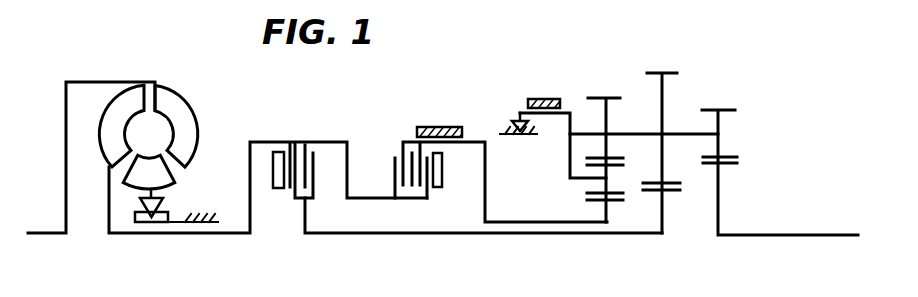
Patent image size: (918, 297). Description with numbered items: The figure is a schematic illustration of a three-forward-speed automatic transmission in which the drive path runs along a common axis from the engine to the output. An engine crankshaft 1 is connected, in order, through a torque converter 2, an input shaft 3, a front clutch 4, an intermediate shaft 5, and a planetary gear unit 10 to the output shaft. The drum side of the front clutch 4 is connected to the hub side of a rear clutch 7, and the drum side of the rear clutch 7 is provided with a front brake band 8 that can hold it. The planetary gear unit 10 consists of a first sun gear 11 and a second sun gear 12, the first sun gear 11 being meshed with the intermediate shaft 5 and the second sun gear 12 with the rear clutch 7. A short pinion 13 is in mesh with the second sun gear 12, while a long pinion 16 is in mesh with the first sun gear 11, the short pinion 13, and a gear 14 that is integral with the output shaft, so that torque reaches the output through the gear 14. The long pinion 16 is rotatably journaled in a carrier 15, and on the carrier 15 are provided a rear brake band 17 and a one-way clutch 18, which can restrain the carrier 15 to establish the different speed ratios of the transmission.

The engine crankshaft 1 is at (43, 234).
The torque converter 2 is at (178, 110).
The input shaft 3 is at (153, 235).
The front clutch 4 is at (318, 118).
The intermediate shaft 5 is at (417, 235).
The rear clutch 7 is at (410, 157).
The front brake band 8 is at (433, 125).
The planetary gear unit 10 is at (635, 89).
The first sun gear 11 is at (665, 212).
The second sun gear 12 is at (610, 210).
The short pinion 13 is at (612, 168).
The gear 14 is at (722, 198).
The carrier 15 is at (568, 165).
The long pinion 16 is at (602, 97).
The rear brake band 17 is at (540, 97).
The one-way clutch 18 is at (515, 114).